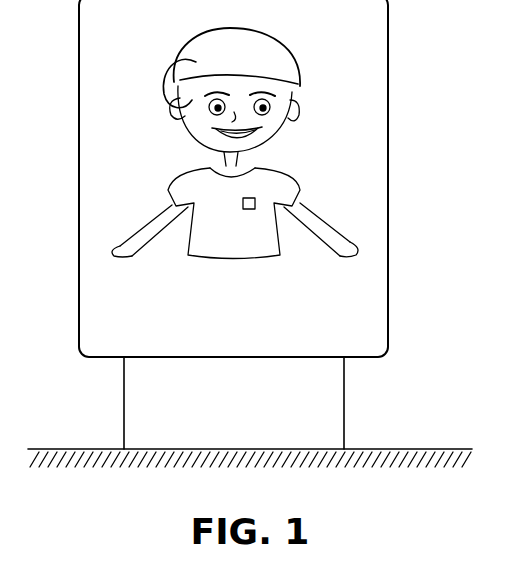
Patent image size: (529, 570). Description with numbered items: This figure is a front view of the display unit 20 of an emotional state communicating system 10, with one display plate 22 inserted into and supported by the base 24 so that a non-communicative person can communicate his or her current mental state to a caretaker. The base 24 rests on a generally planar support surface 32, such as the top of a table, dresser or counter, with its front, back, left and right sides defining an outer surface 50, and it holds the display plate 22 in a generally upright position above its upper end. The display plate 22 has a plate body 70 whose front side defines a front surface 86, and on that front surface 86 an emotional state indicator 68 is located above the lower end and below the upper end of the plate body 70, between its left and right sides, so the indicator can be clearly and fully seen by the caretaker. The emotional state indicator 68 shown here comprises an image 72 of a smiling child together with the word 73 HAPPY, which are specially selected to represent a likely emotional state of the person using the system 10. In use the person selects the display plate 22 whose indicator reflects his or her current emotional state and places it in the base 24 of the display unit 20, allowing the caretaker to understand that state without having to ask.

The system 10 is at (436, 117).
The display unit 20 is at (104, 387).
The display plate 22 is at (76, 303).
The base 24 is at (123, 415).
The support surface 32 is at (438, 447).
The outer surface 50 is at (306, 402).
The emotional state indicator 68 is at (300, 178).
The plate body 70 is at (108, 165).
The image 72 is at (176, 97).
The word or words 73 is at (300, 289).
The front surface 86 is at (345, 54).